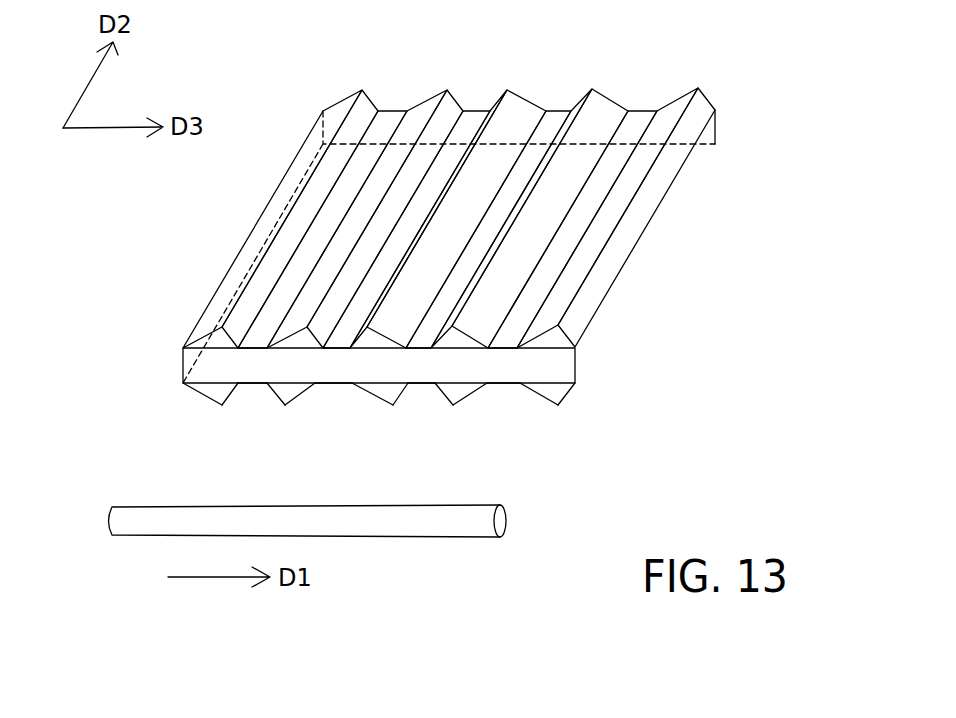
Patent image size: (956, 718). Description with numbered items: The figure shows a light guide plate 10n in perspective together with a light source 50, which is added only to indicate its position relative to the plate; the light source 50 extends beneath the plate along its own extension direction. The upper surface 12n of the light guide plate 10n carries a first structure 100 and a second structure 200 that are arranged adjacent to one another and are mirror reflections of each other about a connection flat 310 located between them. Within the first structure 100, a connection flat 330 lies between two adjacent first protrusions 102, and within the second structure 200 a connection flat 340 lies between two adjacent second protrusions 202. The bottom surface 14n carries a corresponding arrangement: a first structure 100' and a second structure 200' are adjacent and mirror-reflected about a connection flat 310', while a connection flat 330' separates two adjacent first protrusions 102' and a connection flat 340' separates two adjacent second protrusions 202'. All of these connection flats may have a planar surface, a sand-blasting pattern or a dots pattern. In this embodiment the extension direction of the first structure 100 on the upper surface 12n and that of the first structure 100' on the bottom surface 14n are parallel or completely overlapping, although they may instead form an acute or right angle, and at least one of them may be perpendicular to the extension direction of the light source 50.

The light guide plate 10n is at (832, 63).
The upper surface 12n is at (632, 88).
The bottom surface 14n is at (617, 313).
The light source 50 is at (507, 520).
The first structure 100 is at (374, 218).
The first protrusion 102 is at (409, 218).
The connection flat 330 is at (263, 229).
The connection flat 310 is at (388, 229).
The second structure 200 is at (489, 178).
The second protrusion 202 is at (497, 178).
The connection flat 340 is at (488, 190).
The first structure 100' is at (358, 444).
The first protrusion 102' is at (358, 418).
The connection flat 330' is at (247, 418).
The connection flat 310' is at (411, 444).
The second structure 200' is at (455, 444).
The second protrusion 202' is at (417, 418).
The connection flat 340' is at (417, 418).